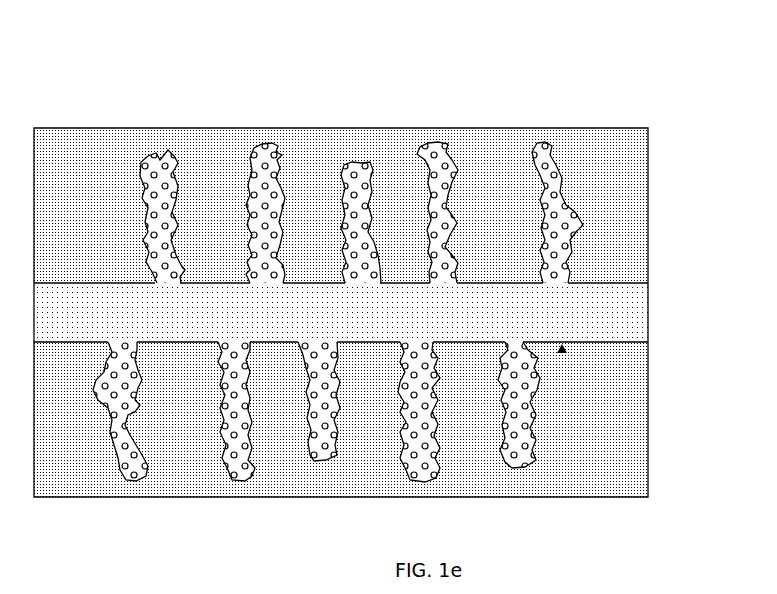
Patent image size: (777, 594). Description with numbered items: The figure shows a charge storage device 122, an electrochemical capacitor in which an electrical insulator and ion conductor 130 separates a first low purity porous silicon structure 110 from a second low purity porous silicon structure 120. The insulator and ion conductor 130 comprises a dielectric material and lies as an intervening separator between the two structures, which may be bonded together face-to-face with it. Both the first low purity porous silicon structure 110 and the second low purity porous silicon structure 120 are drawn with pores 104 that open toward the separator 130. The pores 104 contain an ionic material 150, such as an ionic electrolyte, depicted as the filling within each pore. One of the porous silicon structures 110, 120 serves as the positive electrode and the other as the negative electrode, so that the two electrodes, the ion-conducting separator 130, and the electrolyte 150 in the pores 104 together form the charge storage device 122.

The charge storage device 122 is at (637, 94).
The second low purity porous silicon structure 120 is at (104, 168).
The first low purity porous silicon structure 110 is at (100, 485).
The electrical insulator and ion conductor 130 is at (623, 318).
The ionic material 150 is at (442, 143).
The pores 104 is at (166, 291).